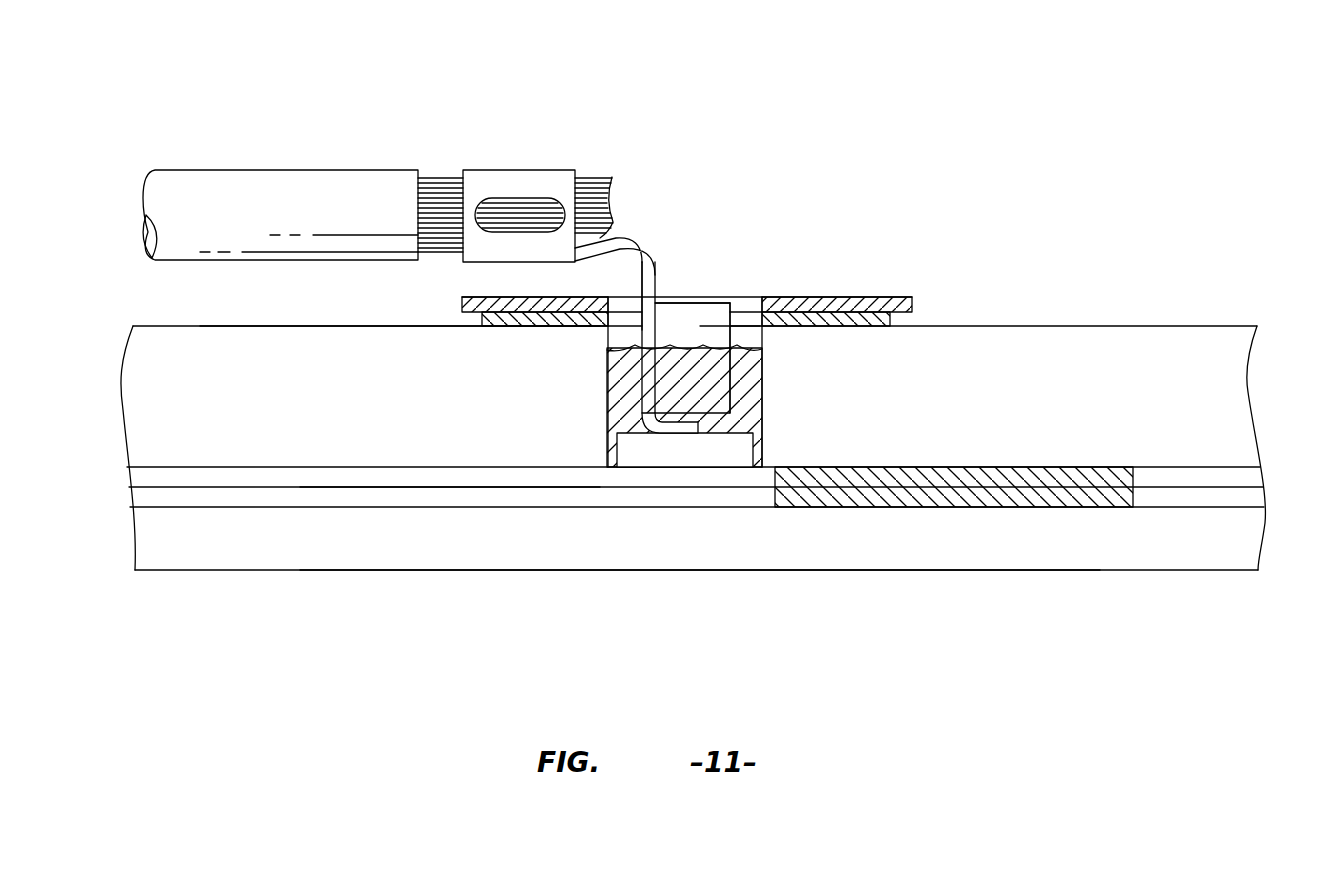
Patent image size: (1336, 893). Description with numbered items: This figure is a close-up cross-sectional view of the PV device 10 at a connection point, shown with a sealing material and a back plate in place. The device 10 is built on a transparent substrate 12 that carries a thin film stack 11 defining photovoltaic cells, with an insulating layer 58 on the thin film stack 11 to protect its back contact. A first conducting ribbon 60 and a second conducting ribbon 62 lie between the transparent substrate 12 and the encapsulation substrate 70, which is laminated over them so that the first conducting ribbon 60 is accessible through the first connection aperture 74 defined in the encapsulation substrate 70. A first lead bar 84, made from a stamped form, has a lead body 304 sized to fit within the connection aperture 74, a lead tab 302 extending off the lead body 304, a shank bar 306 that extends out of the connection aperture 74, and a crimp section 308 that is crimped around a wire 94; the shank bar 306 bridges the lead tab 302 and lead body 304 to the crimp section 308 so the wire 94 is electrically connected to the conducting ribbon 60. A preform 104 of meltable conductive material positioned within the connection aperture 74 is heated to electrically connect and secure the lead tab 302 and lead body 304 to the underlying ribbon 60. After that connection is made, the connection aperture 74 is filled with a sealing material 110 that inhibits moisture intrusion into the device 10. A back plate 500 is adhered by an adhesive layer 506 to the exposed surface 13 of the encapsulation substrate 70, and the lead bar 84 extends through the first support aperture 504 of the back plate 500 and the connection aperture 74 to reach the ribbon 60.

The PV device 10 is at (1022, 230).
The thin film stack 11 is at (192, 505).
The transparent substrate 12 is at (1150, 537).
The exposed surface 13 is at (1178, 322).
The insulating layer 58 is at (348, 497).
The first conducting ribbon 60 is at (442, 473).
The second conducting ribbon 62 is at (1218, 477).
The encapsulation substrate 70 is at (1057, 350).
The first connection aperture 74 is at (736, 337).
The first lead bar 84 is at (688, 305).
The wire 94 is at (278, 182).
The preform 104 is at (707, 223).
The sealing material 110 is at (747, 388).
The lead tab 302 is at (685, 432).
The lead body 304 is at (712, 308).
The shank bar 306 is at (648, 258).
The crimp section 308 is at (520, 182).
The back plate 500 is at (868, 308).
The first support aperture 504 is at (629, 284).
The adhesive layer 506 is at (824, 310).